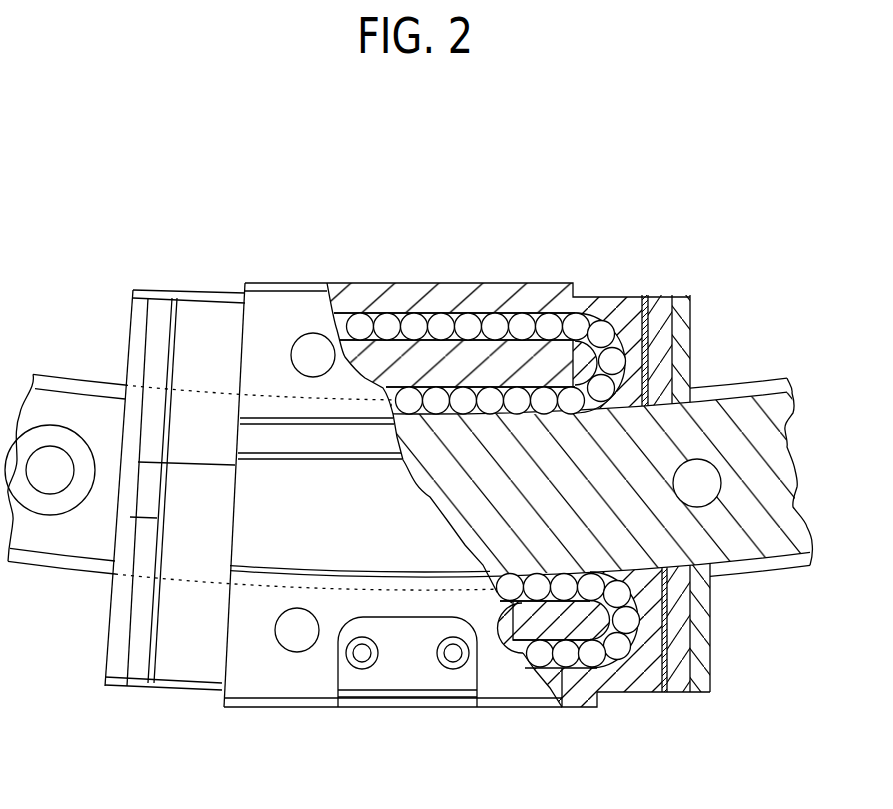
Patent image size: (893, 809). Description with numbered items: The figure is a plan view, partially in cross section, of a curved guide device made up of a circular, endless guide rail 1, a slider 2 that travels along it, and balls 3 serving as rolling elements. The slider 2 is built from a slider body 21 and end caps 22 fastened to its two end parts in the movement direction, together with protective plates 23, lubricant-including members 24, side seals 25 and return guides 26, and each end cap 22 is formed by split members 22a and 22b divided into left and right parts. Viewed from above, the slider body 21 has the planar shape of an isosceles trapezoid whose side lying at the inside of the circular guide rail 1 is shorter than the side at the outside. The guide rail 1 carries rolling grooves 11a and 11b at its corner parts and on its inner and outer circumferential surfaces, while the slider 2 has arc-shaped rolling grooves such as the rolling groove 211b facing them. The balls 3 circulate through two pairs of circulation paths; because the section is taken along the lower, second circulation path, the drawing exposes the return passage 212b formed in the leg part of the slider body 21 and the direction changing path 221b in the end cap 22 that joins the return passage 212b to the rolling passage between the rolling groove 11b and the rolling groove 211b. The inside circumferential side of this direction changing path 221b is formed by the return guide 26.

The circular guide rail 1 is at (95, 378).
The slider 2 is at (290, 283).
The balls 3 is at (450, 312).
The rolling groove 11a is at (60, 377).
The rolling groove 11b is at (740, 384).
The slider body 21 is at (281, 685).
The end cap 22 is at (223, 292).
The split member 22a is at (187, 690).
The split member 22b is at (197, 318).
The protective plate 23 is at (645, 296).
The lubricant-including member 24 is at (661, 296).
The side seal 25 is at (682, 297).
The return guide 26 is at (548, 312).
The rolling groove 211b is at (507, 385).
The return passage 212b is at (403, 332).
The direction changing path 221b is at (617, 297).